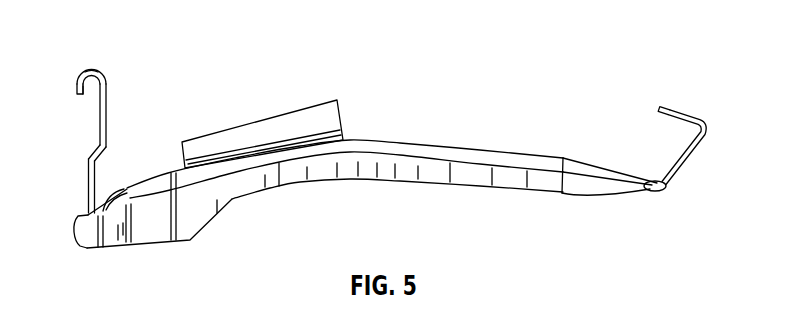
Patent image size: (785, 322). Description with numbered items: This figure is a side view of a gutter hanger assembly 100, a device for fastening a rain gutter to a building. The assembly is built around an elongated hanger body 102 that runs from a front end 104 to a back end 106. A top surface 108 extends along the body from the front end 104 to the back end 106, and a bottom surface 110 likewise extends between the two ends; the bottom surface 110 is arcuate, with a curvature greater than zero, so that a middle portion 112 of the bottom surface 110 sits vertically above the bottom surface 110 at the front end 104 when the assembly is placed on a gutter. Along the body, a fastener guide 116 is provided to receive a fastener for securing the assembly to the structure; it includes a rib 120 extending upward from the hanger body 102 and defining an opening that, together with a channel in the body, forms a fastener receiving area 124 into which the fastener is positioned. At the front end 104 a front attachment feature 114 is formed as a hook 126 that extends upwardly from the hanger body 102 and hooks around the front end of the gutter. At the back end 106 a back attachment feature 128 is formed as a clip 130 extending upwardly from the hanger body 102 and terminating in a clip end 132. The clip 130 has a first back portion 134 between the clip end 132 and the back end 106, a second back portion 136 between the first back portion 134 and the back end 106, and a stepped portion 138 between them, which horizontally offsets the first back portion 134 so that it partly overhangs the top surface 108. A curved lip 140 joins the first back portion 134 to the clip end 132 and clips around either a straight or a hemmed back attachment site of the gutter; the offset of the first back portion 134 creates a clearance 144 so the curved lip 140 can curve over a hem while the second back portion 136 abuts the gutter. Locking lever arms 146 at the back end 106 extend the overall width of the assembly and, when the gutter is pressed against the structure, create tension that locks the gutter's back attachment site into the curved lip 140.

The gutter hanger assembly 100 is at (492, 103).
The hanger body 102 is at (533, 156).
The front end 104 is at (662, 192).
The back end 106 is at (85, 216).
The top surface 108 is at (436, 143).
The bottom surface 110 is at (475, 187).
The middle portion 112 is at (405, 182).
The front attachment feature 114 is at (697, 150).
The fastener guide 116 is at (331, 77).
The rib 120 is at (258, 118).
The fastener receiving area 124 is at (344, 138).
The hook 126 is at (677, 110).
The back attachment feature 128 is at (106, 108).
The clip 130 is at (106, 82).
The clip end 132 is at (77, 94).
The first back portion 134 is at (106, 133).
The second back portion 136 is at (88, 183).
The stepped portion 138 is at (108, 150).
The curved lip 140 is at (88, 69).
The clearance 144 is at (87, 98).
The locking lever arms 146 is at (94, 250).